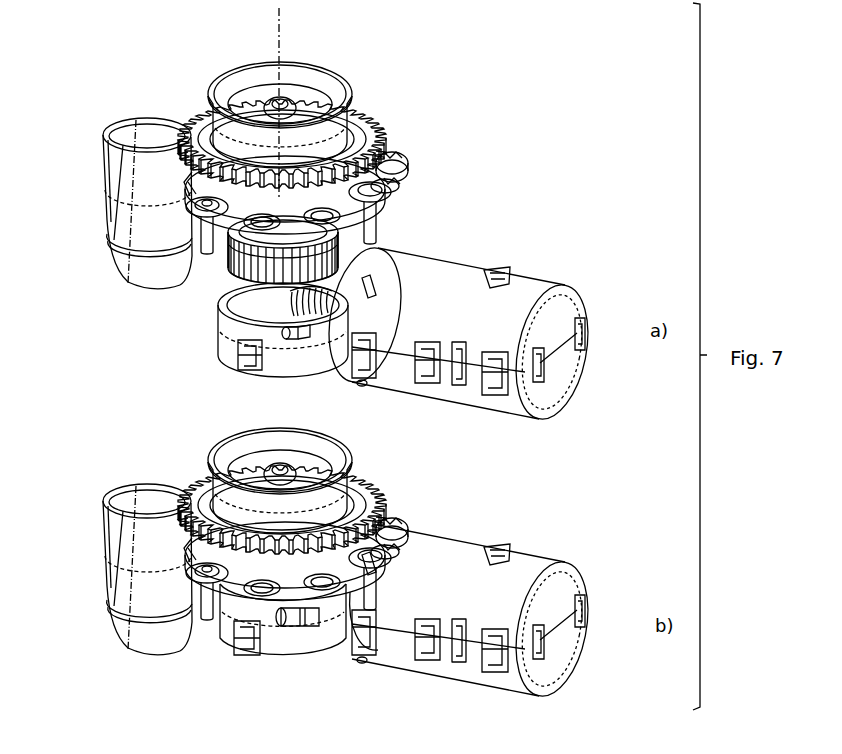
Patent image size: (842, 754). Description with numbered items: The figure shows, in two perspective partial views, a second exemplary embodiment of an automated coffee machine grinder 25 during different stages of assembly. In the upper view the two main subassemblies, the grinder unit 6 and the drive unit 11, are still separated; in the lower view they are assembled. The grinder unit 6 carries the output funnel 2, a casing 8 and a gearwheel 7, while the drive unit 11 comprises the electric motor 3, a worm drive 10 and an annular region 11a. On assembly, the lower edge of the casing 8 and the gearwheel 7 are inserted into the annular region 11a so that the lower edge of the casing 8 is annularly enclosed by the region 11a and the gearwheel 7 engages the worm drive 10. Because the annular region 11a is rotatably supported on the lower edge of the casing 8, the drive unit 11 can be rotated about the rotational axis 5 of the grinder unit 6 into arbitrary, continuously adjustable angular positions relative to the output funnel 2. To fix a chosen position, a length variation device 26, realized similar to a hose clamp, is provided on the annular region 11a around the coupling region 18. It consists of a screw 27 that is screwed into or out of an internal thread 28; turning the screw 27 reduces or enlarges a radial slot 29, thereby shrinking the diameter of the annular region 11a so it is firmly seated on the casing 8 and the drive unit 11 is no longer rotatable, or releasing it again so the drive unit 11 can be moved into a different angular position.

The output funnel 2 is at (124, 120).
The electric motor 3 is at (463, 284).
The rotational axis 5 is at (282, 36).
The grinder unit 6 is at (383, 113).
The gearwheel 7 is at (300, 262).
The casing 8 is at (262, 228).
The worm drive 10 is at (253, 278).
The drive unit 11 is at (473, 466).
The annular region 11a is at (246, 346).
The coupling region 18 is at (250, 492).
The automated coffee machine grinder 25 is at (354, 310).
The length variation device 26 is at (284, 333).
The screw 27 is at (289, 340).
The internal thread 28 is at (328, 336).
The radial slot 29 is at (311, 336).